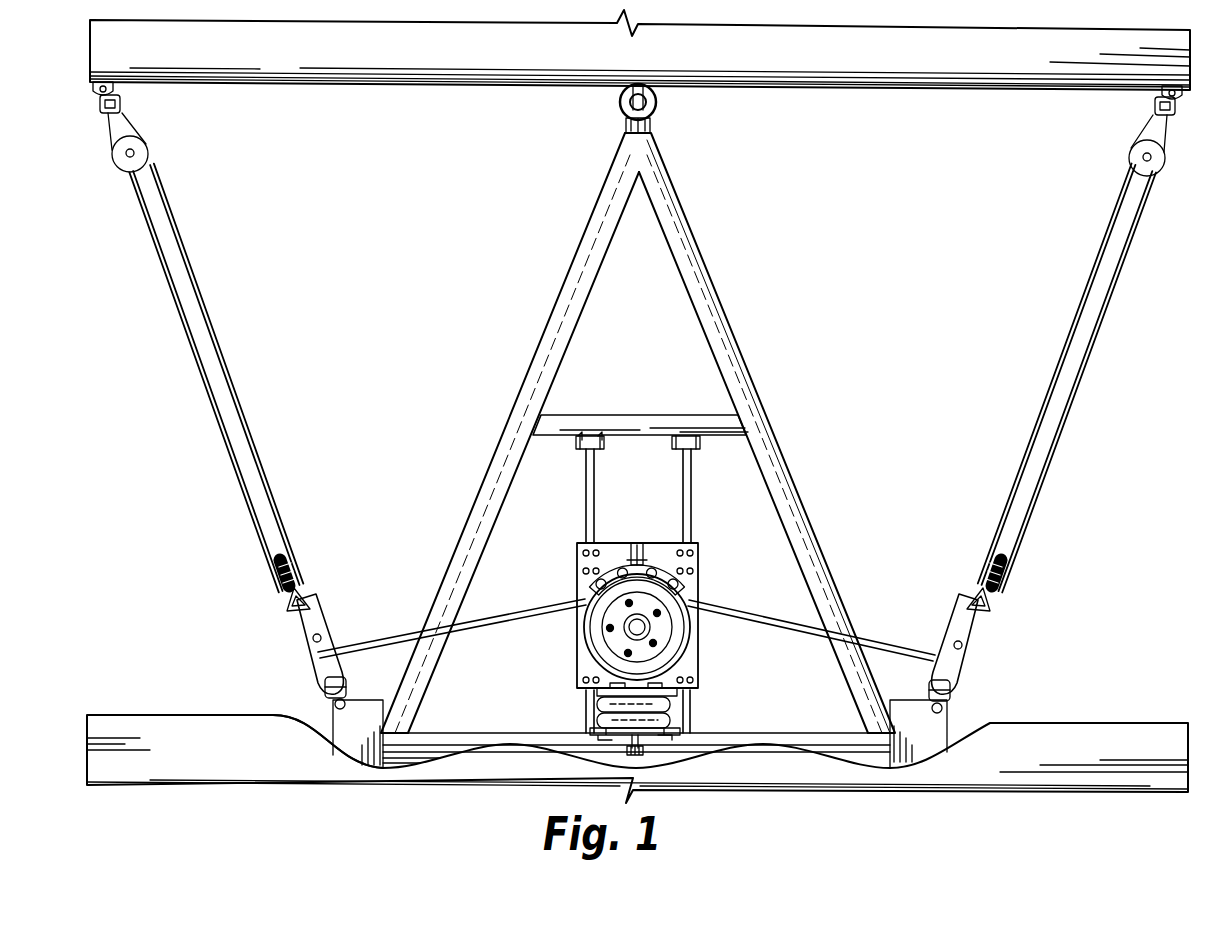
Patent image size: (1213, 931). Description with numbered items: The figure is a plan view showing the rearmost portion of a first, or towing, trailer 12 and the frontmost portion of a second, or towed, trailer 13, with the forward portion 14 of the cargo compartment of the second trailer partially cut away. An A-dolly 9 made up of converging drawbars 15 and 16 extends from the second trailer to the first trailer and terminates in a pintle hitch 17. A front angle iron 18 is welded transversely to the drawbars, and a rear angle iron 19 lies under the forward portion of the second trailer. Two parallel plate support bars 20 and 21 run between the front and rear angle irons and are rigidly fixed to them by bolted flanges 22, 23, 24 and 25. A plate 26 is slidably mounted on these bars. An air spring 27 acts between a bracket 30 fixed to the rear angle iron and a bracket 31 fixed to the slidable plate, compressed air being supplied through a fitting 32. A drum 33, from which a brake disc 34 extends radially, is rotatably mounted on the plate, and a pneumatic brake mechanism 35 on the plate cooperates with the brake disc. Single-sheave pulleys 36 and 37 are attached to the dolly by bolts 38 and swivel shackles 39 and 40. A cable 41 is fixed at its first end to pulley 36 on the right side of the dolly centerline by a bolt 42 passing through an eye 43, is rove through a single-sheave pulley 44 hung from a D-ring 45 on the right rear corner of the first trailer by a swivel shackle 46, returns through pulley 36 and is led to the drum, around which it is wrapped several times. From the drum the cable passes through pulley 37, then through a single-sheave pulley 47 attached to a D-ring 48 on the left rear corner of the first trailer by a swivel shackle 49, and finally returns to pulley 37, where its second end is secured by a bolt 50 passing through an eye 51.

The dolly 9 is at (638, 408).
The first trailer 12 is at (364, 98).
The second trailer 13 is at (154, 705).
The forward portion 14 is at (232, 728).
The drawbar 15 is at (570, 280).
The drawbar 16 is at (698, 248).
The pintle hitch 17 is at (655, 105).
The front angle iron 18 is at (648, 414).
The rear angle iron 19 is at (424, 746).
The plate support bar 20 is at (585, 490).
The plate support bar 21 is at (692, 490).
The bolted flange 22 is at (576, 447).
The bolted flange 23 is at (700, 447).
The bolted flange 24 is at (570, 730).
The bolted flange 25 is at (700, 733).
The plate 26 is at (577, 568).
The air spring 27 is at (597, 700).
The bracket 30 is at (612, 736).
The bracket 31 is at (668, 690).
The fitting 32 is at (645, 752).
The drum 33 is at (597, 628).
The brake disc 34 is at (685, 638).
The pneumatic brake mechanism 35 is at (656, 553).
The single-sheave pulley 36 is at (963, 658).
The single-sheave pulley 37 is at (312, 650).
The bolt 38 is at (325, 688).
The swivel shackle 39 is at (334, 703).
The swivel shackle 40 is at (950, 703).
The cable 41 is at (207, 313).
The bolt 42 is at (962, 618).
The eye 43 is at (975, 600).
The single-sheave pulley 44 is at (1132, 146).
The D-ring 45 is at (1162, 94).
The swivel shackle 46 is at (1156, 112).
The single-sheave pulley 47 is at (148, 150).
The D-ring 48 is at (113, 88).
The swivel shackle 49 is at (120, 106).
The bolt 50 is at (314, 615).
The eye 51 is at (300, 590).